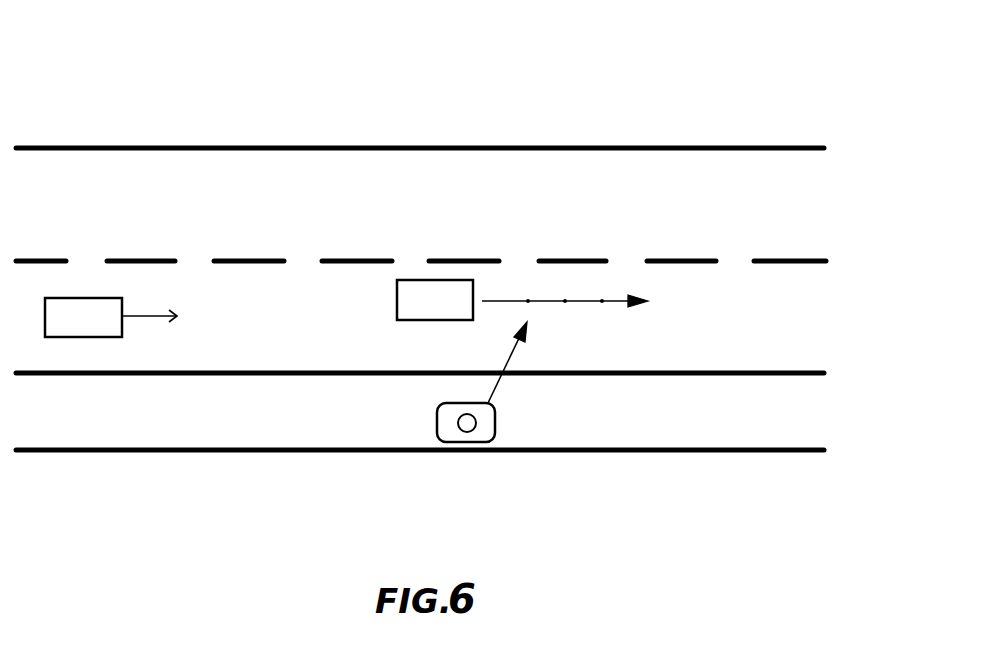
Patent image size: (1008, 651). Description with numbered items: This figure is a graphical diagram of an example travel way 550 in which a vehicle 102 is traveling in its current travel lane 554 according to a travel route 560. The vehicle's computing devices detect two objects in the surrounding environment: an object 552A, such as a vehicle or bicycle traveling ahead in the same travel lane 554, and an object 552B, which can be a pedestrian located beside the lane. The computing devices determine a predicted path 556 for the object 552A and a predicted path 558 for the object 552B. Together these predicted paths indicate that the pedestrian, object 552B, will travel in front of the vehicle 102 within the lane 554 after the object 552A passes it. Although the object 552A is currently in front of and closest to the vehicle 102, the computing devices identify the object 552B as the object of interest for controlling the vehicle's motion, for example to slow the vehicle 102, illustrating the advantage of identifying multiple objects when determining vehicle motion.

The travel way 550 is at (183, 87).
The current travel lane 554 is at (810, 322).
The vehicle 102 is at (83, 317).
The travel route 560 is at (157, 320).
The object 552A is at (435, 300).
The predicted path 556 is at (617, 303).
The predicted path 558 is at (515, 338).
The object 552B is at (484, 422).